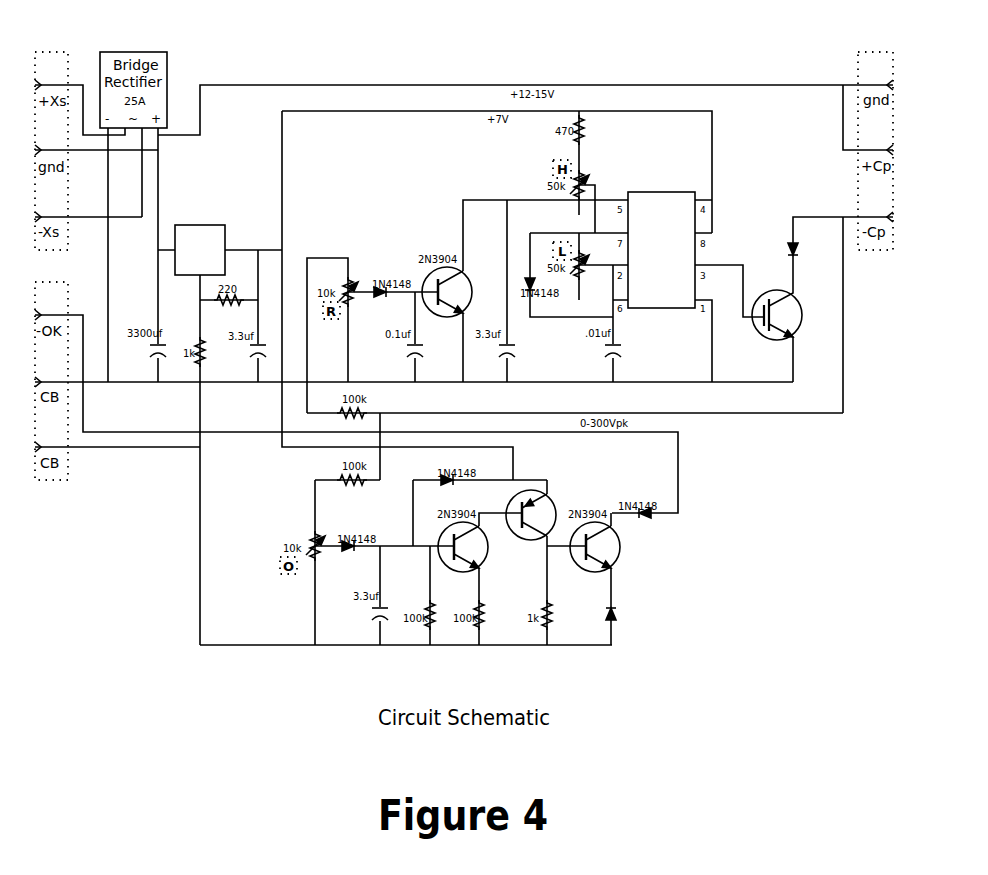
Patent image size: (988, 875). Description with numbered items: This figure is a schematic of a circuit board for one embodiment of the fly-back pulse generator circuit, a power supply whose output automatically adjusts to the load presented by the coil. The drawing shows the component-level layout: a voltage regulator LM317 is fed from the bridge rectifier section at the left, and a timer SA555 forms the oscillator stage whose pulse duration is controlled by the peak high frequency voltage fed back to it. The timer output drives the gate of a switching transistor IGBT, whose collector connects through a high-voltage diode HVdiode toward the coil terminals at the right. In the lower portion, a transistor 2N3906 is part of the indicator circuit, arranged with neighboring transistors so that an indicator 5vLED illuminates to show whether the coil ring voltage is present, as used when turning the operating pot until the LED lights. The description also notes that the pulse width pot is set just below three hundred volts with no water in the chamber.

The voltage regulator LM317 is at (200, 250).
The timer IC SA555 is at (661, 250).
The IGBT transistor IGBT is at (822, 299).
The high voltage diode HVdiode is at (806, 256).
The PNP transistor 2N3906 is at (529, 521).
The LED 5vLED is at (604, 609).